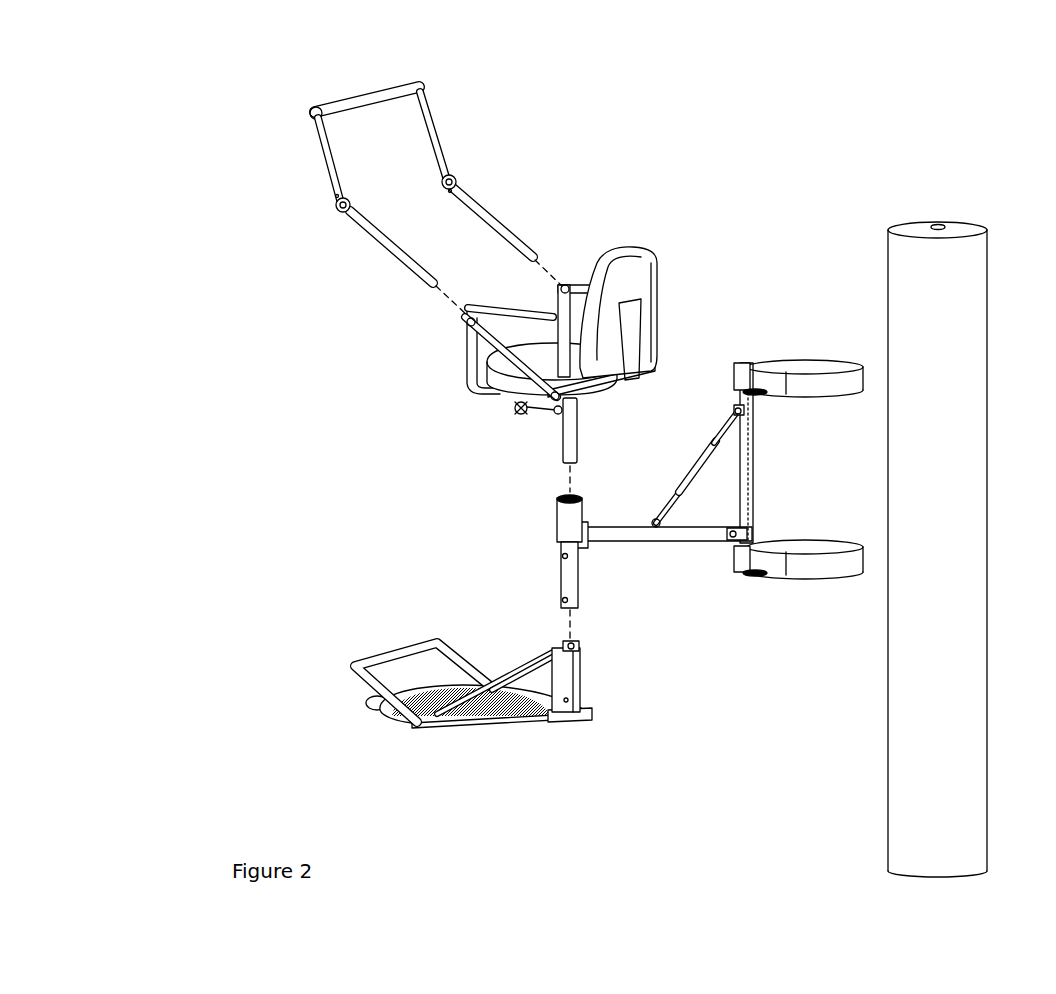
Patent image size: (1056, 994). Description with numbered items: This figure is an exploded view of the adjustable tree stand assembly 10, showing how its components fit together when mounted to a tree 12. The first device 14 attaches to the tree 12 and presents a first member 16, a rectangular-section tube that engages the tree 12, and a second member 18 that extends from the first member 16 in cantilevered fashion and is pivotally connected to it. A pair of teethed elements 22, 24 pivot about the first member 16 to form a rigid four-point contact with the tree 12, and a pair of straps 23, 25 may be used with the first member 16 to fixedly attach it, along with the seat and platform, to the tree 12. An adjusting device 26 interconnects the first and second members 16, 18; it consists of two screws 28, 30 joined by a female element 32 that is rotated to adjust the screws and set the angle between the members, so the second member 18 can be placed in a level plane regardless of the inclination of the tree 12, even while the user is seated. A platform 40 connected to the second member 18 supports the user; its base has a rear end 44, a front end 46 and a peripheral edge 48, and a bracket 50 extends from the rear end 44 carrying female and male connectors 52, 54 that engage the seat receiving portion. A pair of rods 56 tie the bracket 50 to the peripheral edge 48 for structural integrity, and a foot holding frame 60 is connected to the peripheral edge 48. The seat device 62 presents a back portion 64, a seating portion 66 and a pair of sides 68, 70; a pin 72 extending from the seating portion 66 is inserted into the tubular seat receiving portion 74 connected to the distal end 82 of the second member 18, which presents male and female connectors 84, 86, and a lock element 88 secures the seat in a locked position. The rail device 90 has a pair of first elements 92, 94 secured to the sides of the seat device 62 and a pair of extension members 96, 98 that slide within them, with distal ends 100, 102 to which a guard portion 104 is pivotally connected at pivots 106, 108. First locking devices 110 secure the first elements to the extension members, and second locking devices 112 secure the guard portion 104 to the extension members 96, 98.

The adjustable tree stand assembly 10 is at (528, 424).
The tree 12 is at (935, 410).
The first device 14 is at (720, 470).
The first member 16 is at (746, 490).
The second member 18 is at (663, 526).
The teethed element 22 is at (744, 372).
The strap 23 is at (808, 366).
The teethed element 24 is at (742, 573).
The strap 25 is at (823, 574).
The adjusting device 26 is at (689, 432).
The screw 28 is at (672, 506).
The screw 30 is at (736, 425).
The female element 32 is at (692, 478).
The platform 40 is at (493, 705).
The rear end 44 is at (567, 712).
The front end 46 is at (372, 708).
The peripheral edge 48 is at (508, 714).
The bracket 50 is at (582, 677).
The female connector 52 is at (566, 704).
The male connector 54 is at (582, 650).
The pair of rods 56 is at (537, 660).
The foot holding frame 60 is at (382, 656).
The seat device 62 is at (520, 330).
The back portion 64 is at (642, 255).
The seating portion 66 is at (512, 392).
The side 68 is at (537, 312).
The side 70 is at (583, 288).
The pin 72 is at (577, 432).
The seat receiving portion 74 is at (521, 563).
The distal end 82 is at (586, 538).
The male connector 84 is at (560, 556).
The female connector 86 is at (560, 600).
The lock element 88 is at (522, 410).
The rail device 90 is at (377, 174).
The first element 92 is at (485, 318).
The first element 94 is at (578, 306).
The extension member 96 is at (395, 255).
The extension member 98 is at (490, 210).
The distal end 100 is at (349, 207).
The distal end 102 is at (445, 178).
The guard portion 104 is at (360, 96).
The pivotal connection 106 is at (340, 213).
The pivotal connection 108 is at (445, 190).
The first locking device 110 is at (470, 328).
The second locking device 112 is at (336, 198).